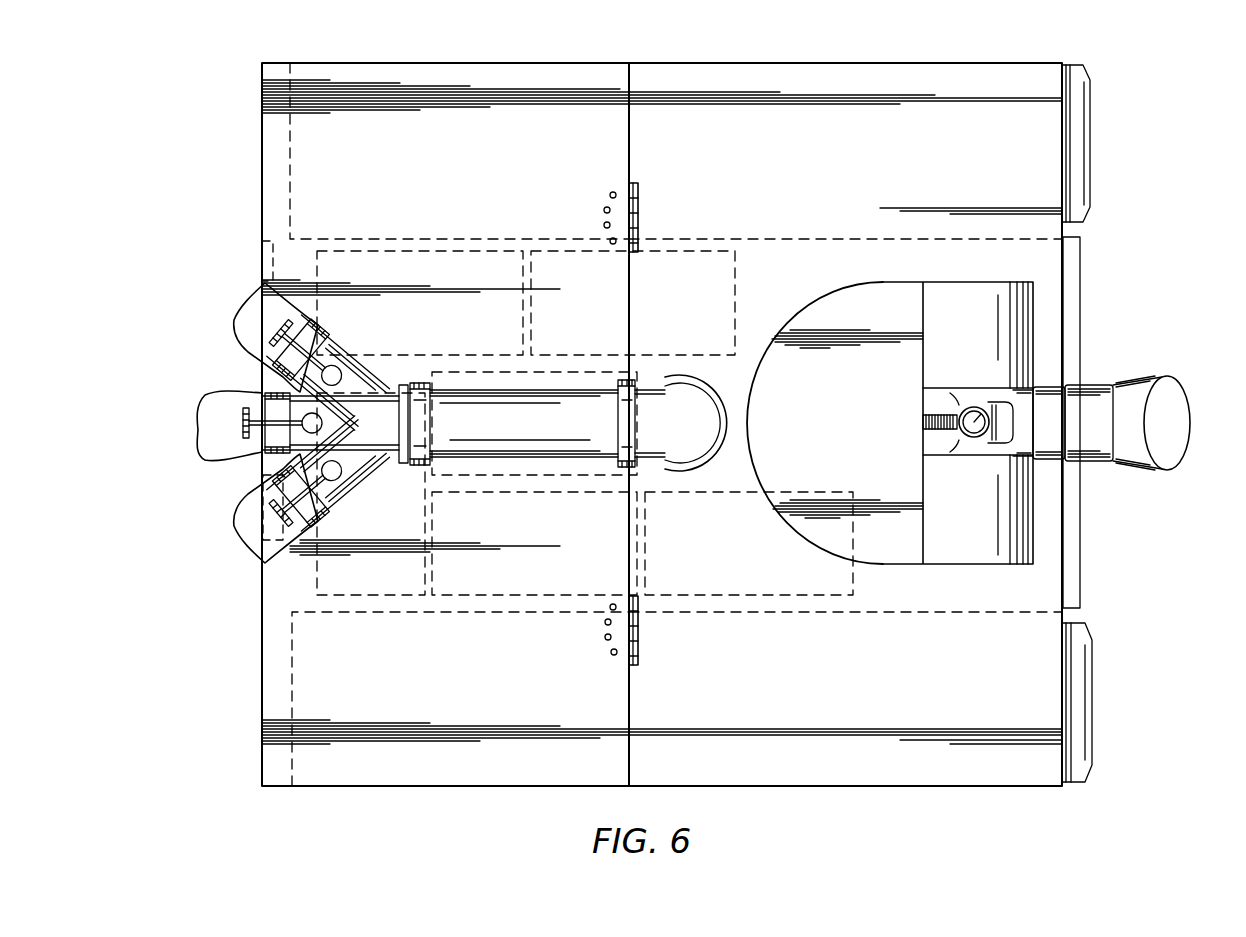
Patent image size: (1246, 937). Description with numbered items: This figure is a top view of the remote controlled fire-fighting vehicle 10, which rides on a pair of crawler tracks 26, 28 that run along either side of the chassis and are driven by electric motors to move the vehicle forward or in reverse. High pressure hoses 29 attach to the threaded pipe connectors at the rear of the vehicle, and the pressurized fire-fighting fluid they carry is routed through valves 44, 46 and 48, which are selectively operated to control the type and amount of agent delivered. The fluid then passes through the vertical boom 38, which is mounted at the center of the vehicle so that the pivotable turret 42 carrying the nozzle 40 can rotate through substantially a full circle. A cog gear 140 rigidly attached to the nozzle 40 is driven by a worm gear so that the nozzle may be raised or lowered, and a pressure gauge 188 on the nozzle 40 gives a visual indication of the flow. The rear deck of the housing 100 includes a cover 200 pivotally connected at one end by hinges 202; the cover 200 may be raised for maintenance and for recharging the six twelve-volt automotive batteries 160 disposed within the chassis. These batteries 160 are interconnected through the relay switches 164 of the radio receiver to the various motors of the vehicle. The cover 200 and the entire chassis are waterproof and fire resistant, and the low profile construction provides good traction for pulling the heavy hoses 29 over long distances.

The remote controlled vehicle 10 is at (690, 400).
The crawler track 26 is at (1092, 141).
The crawler track 28 is at (1094, 698).
The high pressure hoses 29 is at (233, 322).
The vertical boom 38 is at (694, 435).
The nozzle 40 is at (1138, 382).
The pivotable turret 42 is at (851, 435).
The valve 44 is at (264, 345).
The valve 46 is at (262, 444).
The valve 48 is at (264, 517).
The housing 100 is at (893, 62).
The cog gear 140 is at (943, 413).
The automotive batteries 160 is at (413, 251).
The relay switches 164 is at (262, 243).
The pressure gauge 188 is at (970, 439).
The cover 200 is at (520, 62).
The hinges 202 is at (638, 205).